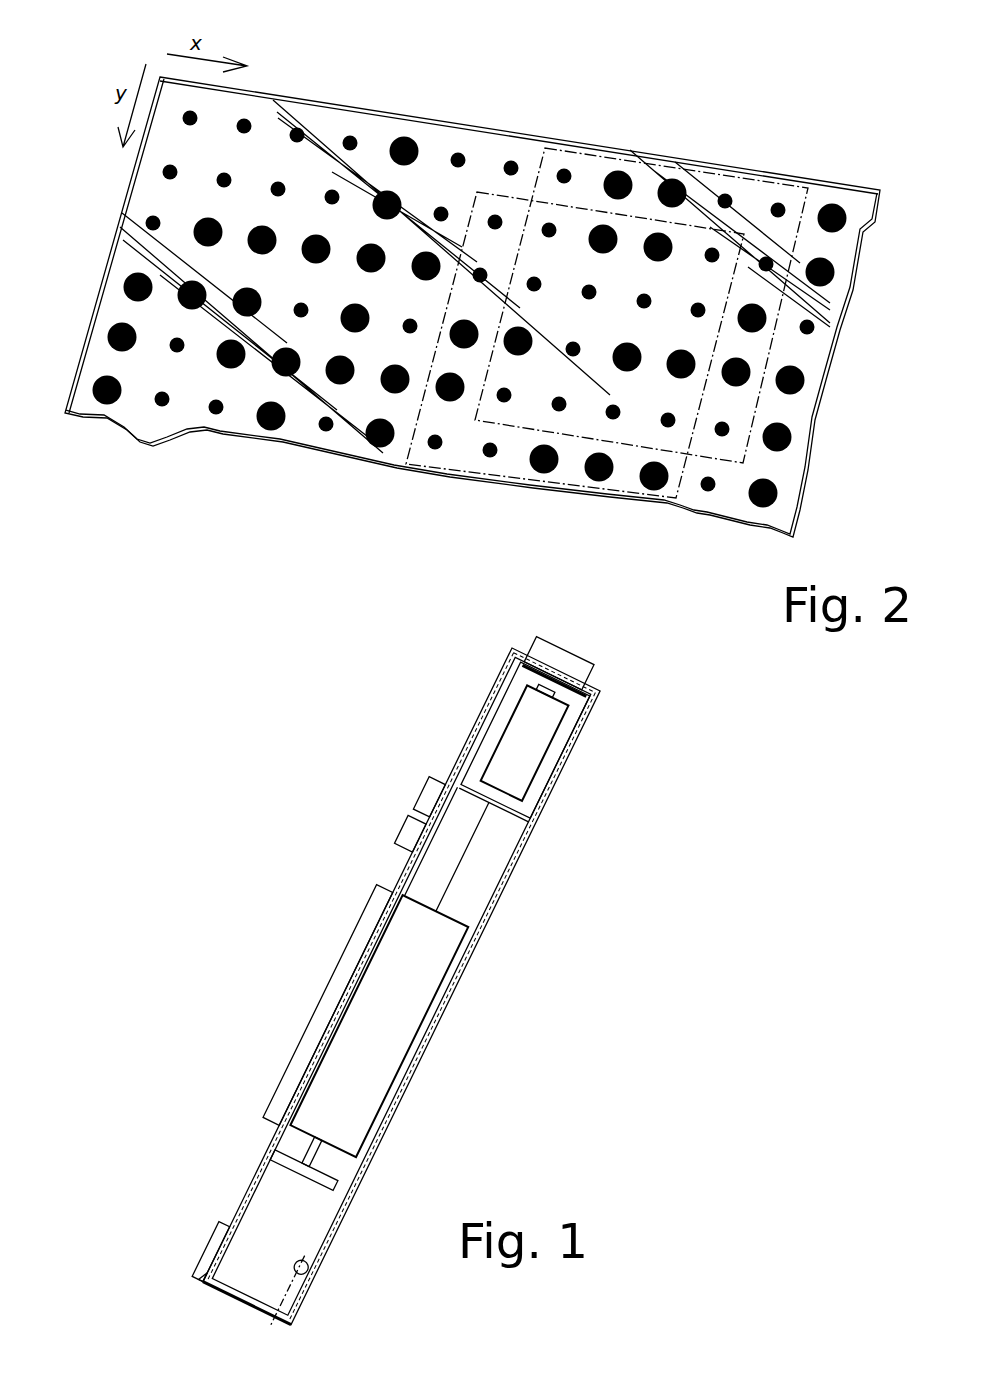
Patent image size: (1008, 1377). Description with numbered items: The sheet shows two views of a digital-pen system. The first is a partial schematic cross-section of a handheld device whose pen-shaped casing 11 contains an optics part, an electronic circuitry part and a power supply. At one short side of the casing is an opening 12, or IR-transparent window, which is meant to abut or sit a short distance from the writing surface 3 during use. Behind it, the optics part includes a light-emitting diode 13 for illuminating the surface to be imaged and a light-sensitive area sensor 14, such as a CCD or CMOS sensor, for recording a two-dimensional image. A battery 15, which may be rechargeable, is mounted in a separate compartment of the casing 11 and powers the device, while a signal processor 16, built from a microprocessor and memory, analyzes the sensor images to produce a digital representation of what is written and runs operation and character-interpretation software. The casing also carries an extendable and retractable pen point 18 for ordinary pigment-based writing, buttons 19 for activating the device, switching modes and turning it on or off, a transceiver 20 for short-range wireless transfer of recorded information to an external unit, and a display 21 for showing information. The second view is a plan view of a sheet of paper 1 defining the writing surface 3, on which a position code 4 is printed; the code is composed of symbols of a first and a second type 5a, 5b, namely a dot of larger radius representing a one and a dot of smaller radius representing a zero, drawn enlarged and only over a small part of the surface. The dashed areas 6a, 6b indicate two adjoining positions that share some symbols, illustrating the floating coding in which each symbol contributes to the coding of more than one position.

In FIG. 2, the sheet of paper 1 is at (783, 159).
In FIG. 2, the writing surface 3 is at (241, 420).
In FIG. 2, the position code 4 is at (513, 154).
In FIG. 2, the symbol of a first type 5a is at (403, 137).
In FIG. 2, the symbol of a second type 5b is at (346, 138).
In FIG. 2, the dashed area 6a is at (607, 157).
In FIG. 2, the dashed area 6b is at (460, 470).
In FIG. 1, the casing 11 is at (473, 950).
In FIG. 1, the opening 12 is at (233, 1300).
In FIG. 1, the light-emitting diode 13 is at (305, 1273).
In FIG. 1, the light-sensitive area sensor 14 is at (334, 1170).
In FIG. 1, the battery 15 is at (521, 752).
In FIG. 1, the signal processor 16 is at (380, 1057).
In FIG. 1, the pen point 18 is at (214, 1243).
In FIG. 1, the buttons 19 is at (403, 837).
In FIG. 1, the transceiver 20 is at (560, 652).
In FIG. 1, the display 21 is at (330, 993).